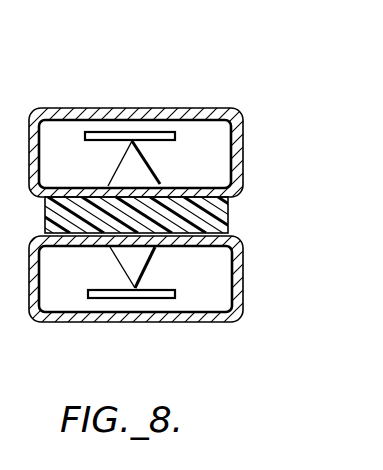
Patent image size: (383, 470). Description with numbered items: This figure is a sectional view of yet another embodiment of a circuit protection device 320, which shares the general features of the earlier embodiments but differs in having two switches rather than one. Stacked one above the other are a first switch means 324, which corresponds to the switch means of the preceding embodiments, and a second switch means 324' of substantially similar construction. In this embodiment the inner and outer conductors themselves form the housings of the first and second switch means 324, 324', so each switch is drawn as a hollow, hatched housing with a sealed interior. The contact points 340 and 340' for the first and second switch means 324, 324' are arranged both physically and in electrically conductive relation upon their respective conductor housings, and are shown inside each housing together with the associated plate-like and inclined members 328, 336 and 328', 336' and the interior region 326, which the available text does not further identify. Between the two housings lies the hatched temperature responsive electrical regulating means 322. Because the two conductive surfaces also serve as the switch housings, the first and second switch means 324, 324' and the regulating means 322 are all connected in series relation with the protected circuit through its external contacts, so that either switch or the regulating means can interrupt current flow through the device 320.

The circuit protection device 320 is at (165, 97).
The temperature responsive electrical regulating means 322 is at (228, 215).
The first switch means 324 is at (190, 204).
The second switch means 324' is at (191, 225).
The chamber 326 is at (55, 198).
The upper plate 328 is at (113, 109).
The lower plate 328' is at (102, 320).
The support leg 336 is at (163, 163).
The lower support leg 336' is at (177, 268).
The contact point 340 is at (214, 162).
The contact point 340' is at (91, 267).